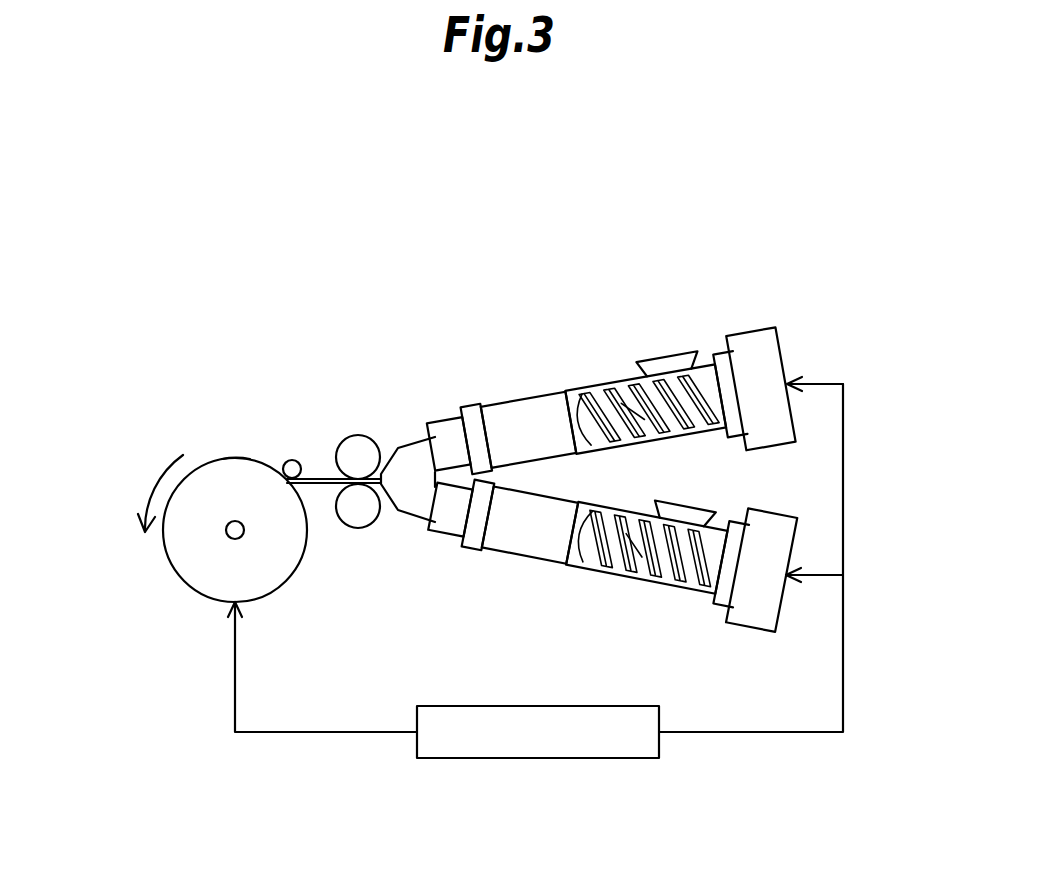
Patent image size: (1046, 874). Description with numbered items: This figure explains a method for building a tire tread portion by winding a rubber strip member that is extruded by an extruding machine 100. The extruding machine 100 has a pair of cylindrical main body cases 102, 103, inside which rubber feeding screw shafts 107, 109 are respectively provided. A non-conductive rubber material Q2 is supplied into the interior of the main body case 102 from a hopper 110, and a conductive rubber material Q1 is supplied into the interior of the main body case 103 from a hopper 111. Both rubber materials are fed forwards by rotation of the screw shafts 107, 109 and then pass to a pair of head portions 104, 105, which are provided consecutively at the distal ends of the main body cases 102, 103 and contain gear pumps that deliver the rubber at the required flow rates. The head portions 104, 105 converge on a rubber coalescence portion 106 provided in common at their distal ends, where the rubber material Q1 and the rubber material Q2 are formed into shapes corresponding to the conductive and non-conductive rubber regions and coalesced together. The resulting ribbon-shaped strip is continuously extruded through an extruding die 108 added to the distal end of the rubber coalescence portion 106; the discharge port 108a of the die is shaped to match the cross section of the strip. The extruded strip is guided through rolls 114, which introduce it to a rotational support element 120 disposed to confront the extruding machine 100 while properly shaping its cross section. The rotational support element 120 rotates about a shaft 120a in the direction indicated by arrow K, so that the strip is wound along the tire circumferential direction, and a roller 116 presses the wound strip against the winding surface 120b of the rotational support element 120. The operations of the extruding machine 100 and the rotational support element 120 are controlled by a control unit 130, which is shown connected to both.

The extruding machine 100 is at (519, 249).
The main body case 102 is at (523, 427).
The main body case 103 is at (517, 530).
The head portion 104 is at (450, 435).
The head portion 105 is at (448, 517).
The rubber coalescence portion 106 is at (417, 467).
The rubber feeding screw shaft 107 is at (645, 417).
The extruding die 108 is at (388, 487).
The discharge port 108a is at (349, 457).
The rubber feeding screw shaft 109 is at (625, 543).
The hopper 110 is at (697, 372).
The hopper 111 is at (697, 508).
The rolls 114 is at (363, 495).
The roller 116 is at (292, 460).
The rotational support element 120 is at (217, 473).
The shaft 120a is at (230, 538).
The winding surface 120b is at (237, 457).
The control unit 130 is at (528, 740).
The arrow K is at (160, 493).
The conductive rubber material Q1 is at (645, 563).
The non-conductive rubber material Q2 is at (627, 380).